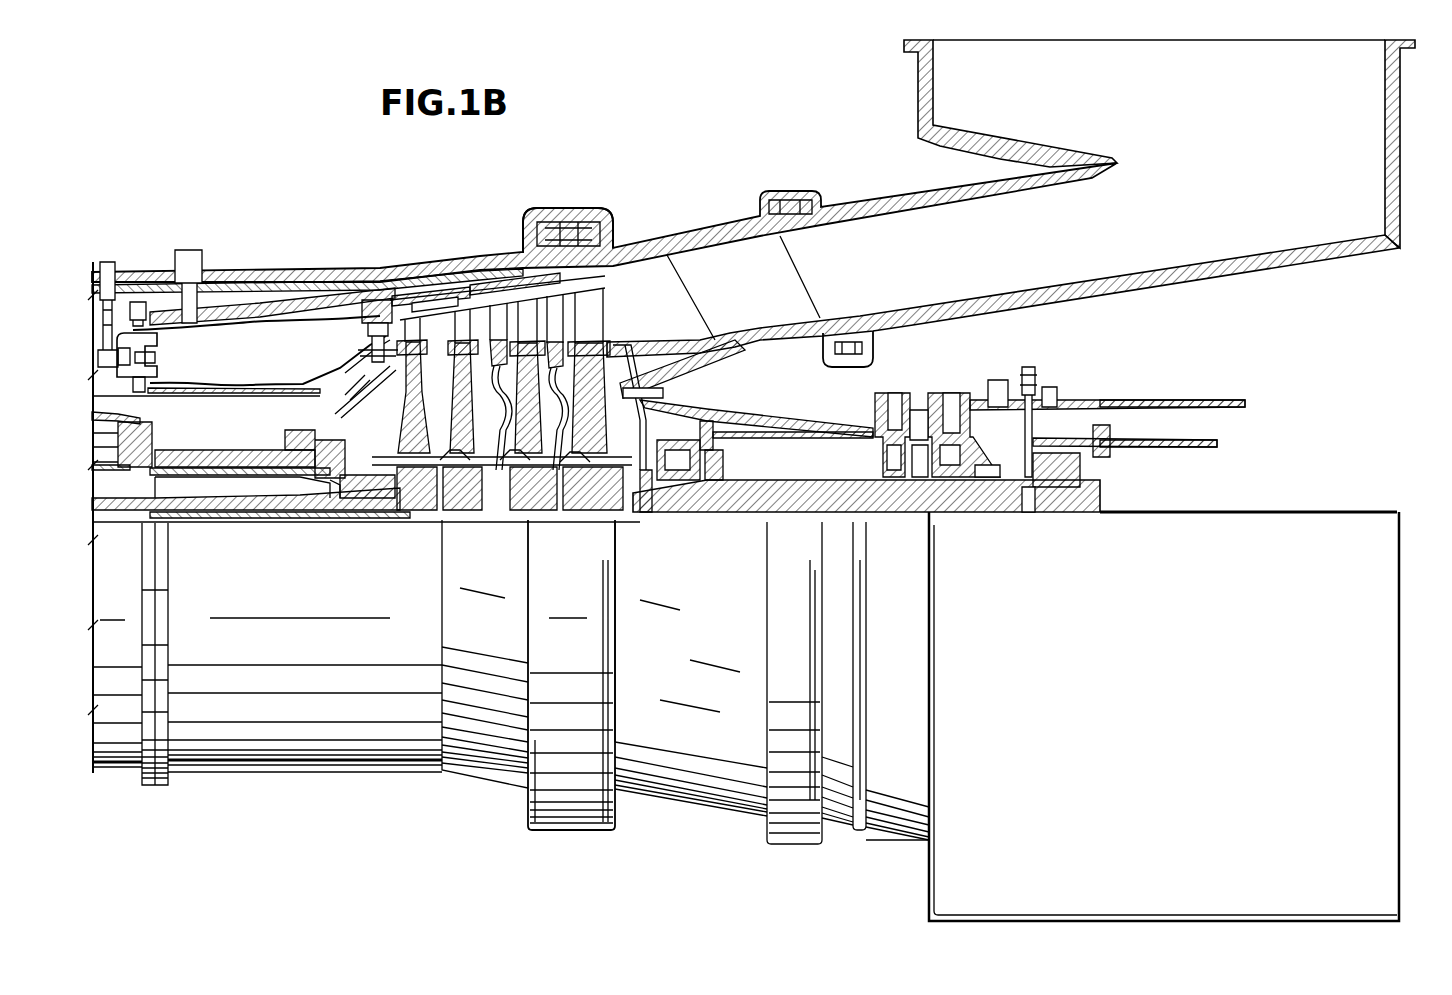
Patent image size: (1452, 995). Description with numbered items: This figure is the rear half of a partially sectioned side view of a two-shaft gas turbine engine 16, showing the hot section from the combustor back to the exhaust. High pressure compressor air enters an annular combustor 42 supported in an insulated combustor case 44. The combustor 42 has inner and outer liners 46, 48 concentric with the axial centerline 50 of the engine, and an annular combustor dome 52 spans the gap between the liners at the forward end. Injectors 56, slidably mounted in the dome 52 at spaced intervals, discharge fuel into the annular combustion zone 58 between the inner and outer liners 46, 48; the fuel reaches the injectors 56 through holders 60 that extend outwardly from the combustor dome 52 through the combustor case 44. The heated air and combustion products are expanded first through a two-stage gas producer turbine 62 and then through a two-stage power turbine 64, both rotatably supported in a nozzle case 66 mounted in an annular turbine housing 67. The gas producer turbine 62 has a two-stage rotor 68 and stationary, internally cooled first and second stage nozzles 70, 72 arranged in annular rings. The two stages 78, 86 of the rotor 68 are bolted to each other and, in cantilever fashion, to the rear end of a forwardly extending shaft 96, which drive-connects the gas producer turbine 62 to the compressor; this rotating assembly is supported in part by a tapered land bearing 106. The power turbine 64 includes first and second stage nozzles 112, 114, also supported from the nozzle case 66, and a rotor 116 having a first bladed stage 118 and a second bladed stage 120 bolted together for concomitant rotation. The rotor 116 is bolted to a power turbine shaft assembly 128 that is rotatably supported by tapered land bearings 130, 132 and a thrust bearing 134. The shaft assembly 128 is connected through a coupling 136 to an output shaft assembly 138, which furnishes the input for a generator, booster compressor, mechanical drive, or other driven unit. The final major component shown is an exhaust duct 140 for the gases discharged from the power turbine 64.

The gas turbine engine 16 is at (248, 222).
The annular combustor 42 is at (226, 400).
The combustor case 44 is at (346, 278).
The inner liner 46 is at (292, 384).
The outer liner 48 is at (290, 326).
The axial centerline 50 is at (456, 525).
The combustor dome 52 is at (100, 330).
The injectors 56 is at (160, 346).
The annular combustion zone 58 is at (172, 360).
The holders 60 is at (108, 344).
The gas producer turbine 62 is at (445, 512).
The power turbine 64 is at (562, 520).
The nozzle case 66 is at (480, 290).
The turbine housing 67 is at (520, 258).
The two-stage rotor 68 is at (398, 423).
The first stage nozzles 70 is at (368, 335).
The second stage nozzles 72 is at (400, 300).
The first stage of gas producer turbine rotor 78 is at (412, 512).
The second stage of gas producer turbine rotor 86 is at (475, 512).
The forwardly extending shaft 96 is at (222, 498).
The tapered land bearing 106 is at (333, 505).
The first stage nozzles of power turbine 112 is at (560, 320).
The second stage nozzles of power turbine 114 is at (578, 336).
The power turbine rotor 116 is at (612, 372).
The first bladed stage 118 is at (545, 518).
The second bladed stage 120 is at (625, 518).
The power turbine shaft assembly 128 is at (835, 485).
The tapered land bearing 130 is at (700, 505).
The tapered land bearing 132 is at (995, 513).
The thrust bearing 134 is at (930, 513).
The coupling 136 is at (983, 380).
The output shaft assembly 138 is at (1212, 400).
The exhaust duct 140 is at (1040, 40).